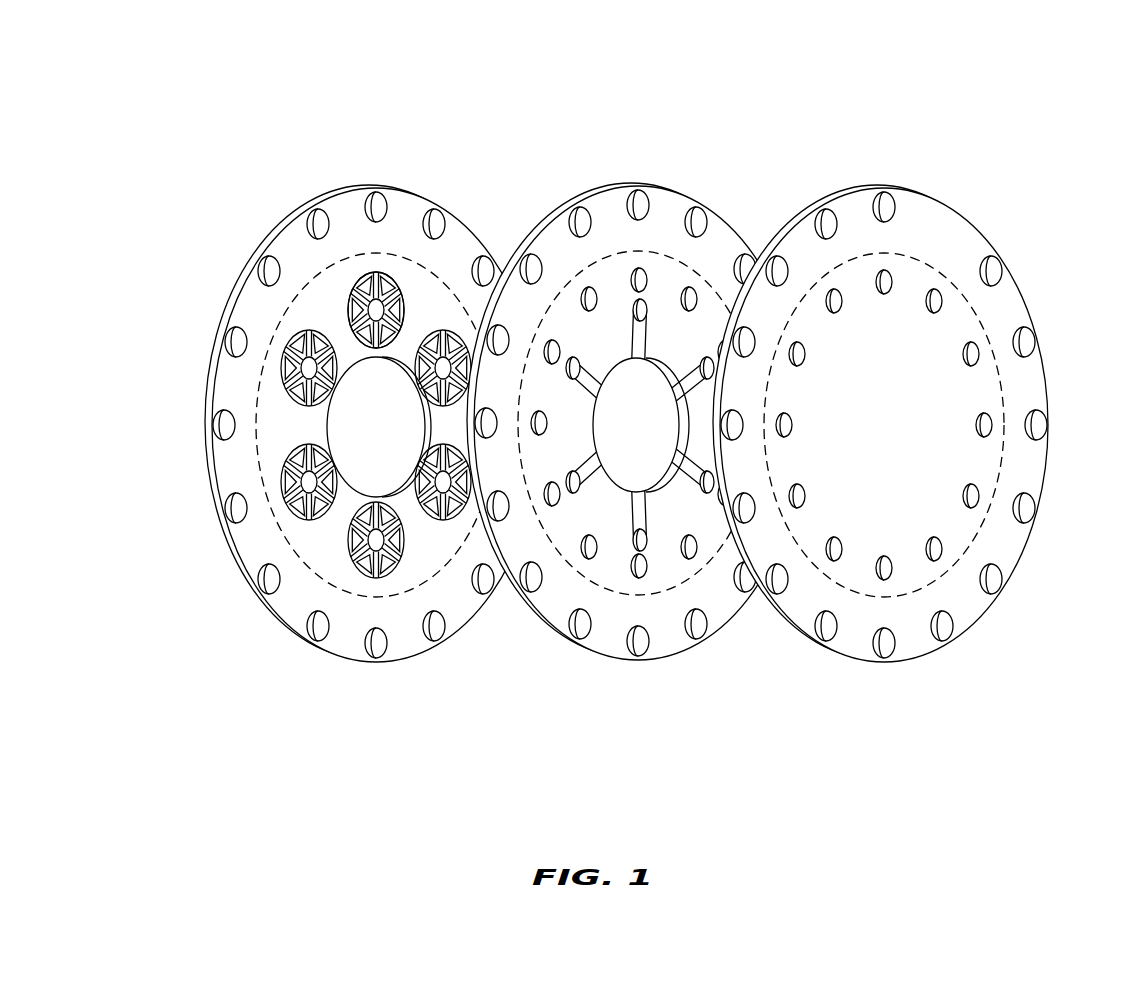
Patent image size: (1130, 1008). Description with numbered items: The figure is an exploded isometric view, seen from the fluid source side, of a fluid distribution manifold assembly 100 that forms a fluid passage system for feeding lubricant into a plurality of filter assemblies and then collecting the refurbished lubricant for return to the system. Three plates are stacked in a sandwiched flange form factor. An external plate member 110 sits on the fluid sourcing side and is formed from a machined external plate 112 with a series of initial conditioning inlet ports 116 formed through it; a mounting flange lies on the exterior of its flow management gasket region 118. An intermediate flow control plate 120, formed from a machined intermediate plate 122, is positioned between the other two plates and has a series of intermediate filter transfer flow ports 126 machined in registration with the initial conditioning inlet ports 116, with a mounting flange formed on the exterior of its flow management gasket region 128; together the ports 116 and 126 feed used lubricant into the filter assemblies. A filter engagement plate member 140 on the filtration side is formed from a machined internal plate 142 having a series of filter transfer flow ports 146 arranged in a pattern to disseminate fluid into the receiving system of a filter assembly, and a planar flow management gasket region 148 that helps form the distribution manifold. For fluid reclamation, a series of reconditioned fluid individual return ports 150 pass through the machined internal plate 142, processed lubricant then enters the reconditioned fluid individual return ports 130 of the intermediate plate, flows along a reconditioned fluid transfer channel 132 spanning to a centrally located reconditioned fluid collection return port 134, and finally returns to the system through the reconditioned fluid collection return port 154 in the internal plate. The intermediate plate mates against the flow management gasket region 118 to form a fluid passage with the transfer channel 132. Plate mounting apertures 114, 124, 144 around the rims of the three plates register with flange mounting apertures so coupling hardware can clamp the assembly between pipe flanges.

The fluid distribution manifold assembly 100 is at (150, 108).
The external plate member 110 is at (914, 412).
The machined external plate 112 is at (1010, 550).
The plate mounting aperture 114 is at (943, 625).
The initial conditioning inlet port 116 is at (988, 425).
The flow management gasket region 118 is at (980, 455).
The intermediate flow control plate 120 is at (653, 410).
The machined intermediate plate 122 is at (610, 635).
The plate mounting aperture 124 is at (707, 627).
The intermediate filter transfer flow port 126 is at (592, 297).
The flow management gasket region 128 is at (697, 324).
The reconditioned fluid individual return port 130 is at (643, 307).
The reconditioned fluid transfer channel 132 is at (588, 382).
The reconditioned fluid collection return port 134 is at (645, 445).
The filter engagement plate member 140 is at (360, 416).
The machined internal plate 142 is at (345, 635).
The plate mounting aperture 144 is at (380, 455).
The filter transfer flow port 146 is at (372, 300).
The flow management gasket region 148 is at (422, 307).
The reconditioned fluid individual return port 150 is at (378, 312).
The reconditioned fluid collection return port 154 is at (442, 627).